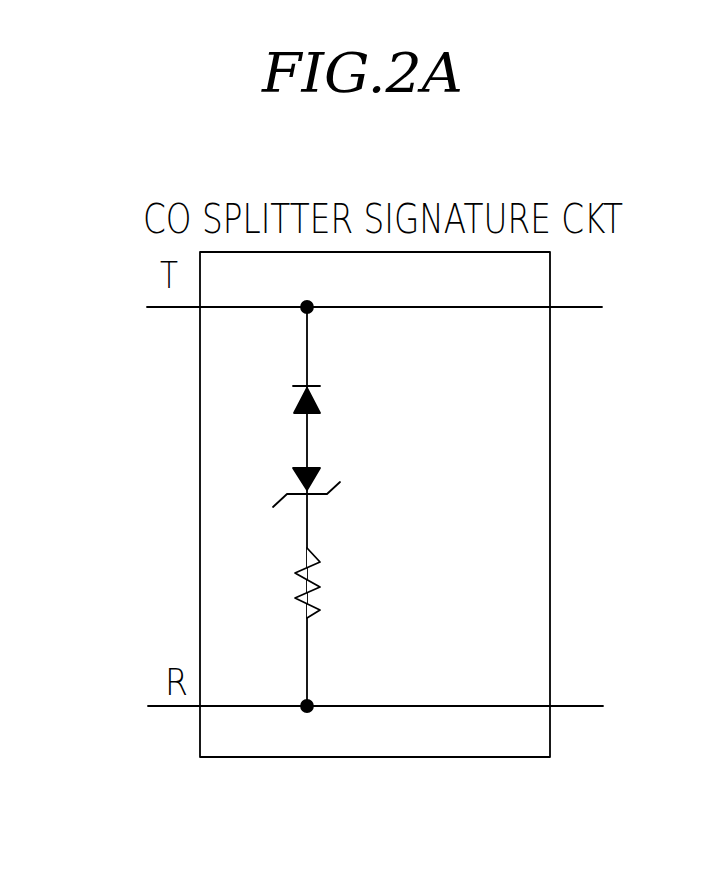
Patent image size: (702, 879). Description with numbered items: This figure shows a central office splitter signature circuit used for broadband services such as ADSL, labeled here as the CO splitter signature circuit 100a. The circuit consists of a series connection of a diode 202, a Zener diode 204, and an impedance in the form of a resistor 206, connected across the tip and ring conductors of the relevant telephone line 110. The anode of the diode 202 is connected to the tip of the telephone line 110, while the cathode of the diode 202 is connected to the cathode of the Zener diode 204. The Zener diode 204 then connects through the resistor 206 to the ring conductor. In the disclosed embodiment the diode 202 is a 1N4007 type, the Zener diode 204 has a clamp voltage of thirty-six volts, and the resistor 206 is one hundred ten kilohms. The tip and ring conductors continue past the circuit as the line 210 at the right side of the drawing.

The CO splitter signature circuit 100a is at (470, 758).
The telephone line 110 is at (187, 308).
The line conductors to subscriber side 210 is at (567, 307).
The diode 202 is at (297, 402).
The Zener diode 204 is at (297, 478).
The resistor 206 is at (293, 572).